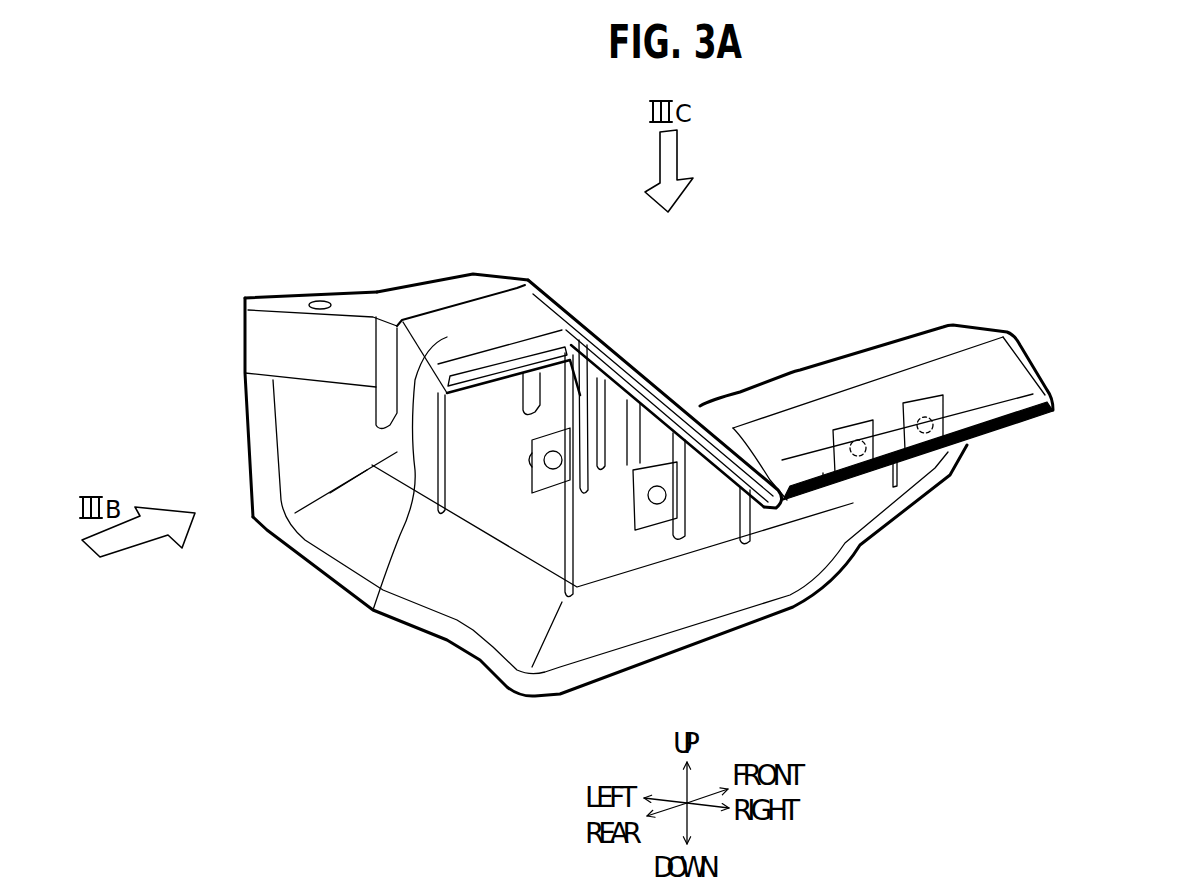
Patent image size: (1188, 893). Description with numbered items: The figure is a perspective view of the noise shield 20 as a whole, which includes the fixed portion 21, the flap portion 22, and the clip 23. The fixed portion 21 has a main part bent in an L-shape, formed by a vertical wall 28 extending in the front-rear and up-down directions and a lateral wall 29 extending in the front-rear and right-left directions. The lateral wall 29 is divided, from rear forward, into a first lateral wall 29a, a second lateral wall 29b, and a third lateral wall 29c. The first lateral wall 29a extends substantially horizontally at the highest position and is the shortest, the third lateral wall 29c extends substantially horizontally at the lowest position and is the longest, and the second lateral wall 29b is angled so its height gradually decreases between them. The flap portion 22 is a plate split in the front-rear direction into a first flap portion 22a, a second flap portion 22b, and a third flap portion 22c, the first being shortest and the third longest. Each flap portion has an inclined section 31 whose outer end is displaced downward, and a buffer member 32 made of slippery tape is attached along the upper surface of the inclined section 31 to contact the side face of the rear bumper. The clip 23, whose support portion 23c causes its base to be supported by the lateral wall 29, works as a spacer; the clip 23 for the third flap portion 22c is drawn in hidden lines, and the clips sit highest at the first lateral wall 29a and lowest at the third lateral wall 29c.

The noise shield 20 is at (386, 249).
The fixed portion 21 is at (567, 675).
The flap portion 22 is at (737, 489).
The first flap portion 22a is at (373, 610).
The second flap portion 22b is at (640, 362).
The third flap portion 22c is at (1010, 370).
The clip 23 is at (769, 556).
The support portion 23c is at (553, 493).
The vertical wall 28 is at (390, 453).
The lateral wall 29 is at (715, 359).
The first lateral wall 29a is at (437, 282).
The second lateral wall 29b is at (588, 300).
The third lateral wall 29c is at (887, 354).
The inclined section 31 is at (610, 345).
The buffer member 32 is at (490, 367).